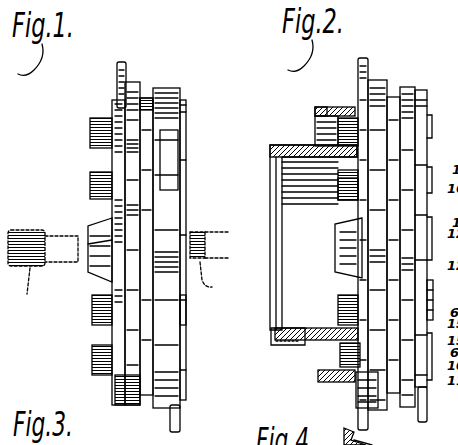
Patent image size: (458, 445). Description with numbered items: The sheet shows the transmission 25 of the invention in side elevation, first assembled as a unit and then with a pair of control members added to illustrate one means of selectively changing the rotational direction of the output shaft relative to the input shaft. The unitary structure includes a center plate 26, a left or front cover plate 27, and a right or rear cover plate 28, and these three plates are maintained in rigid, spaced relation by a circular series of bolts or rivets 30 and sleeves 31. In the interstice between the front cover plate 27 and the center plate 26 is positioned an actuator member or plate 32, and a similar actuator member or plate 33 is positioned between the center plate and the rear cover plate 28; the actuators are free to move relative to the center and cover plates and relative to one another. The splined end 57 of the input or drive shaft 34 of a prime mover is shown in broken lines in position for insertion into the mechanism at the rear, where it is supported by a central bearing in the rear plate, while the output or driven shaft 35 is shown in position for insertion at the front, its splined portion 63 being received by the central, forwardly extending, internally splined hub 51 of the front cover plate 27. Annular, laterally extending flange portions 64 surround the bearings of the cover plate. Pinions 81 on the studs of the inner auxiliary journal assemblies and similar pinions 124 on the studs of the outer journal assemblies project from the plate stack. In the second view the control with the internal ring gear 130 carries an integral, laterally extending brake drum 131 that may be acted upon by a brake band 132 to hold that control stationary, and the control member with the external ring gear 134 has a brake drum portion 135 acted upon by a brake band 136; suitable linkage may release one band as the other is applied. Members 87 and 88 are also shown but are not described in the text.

In FIG. 1, the transmission 25 is at (172, 70).
In FIG. 2, the transmission 25 is at (410, 84).
In FIG. 1, the center plate 26 is at (146, 96).
In FIG. 2, the center plate 26 is at (392, 96).
In FIG. 1, the front cover plate 27 is at (117, 160).
In FIG. 2, the front cover plate 27 is at (364, 81).
In FIG. 1, the rear cover plate 28 is at (175, 136).
In FIG. 2, the rear cover plate 28 is at (422, 88).
In FIG. 1, the bolts or rivets 30 is at (184, 110).
In FIG. 2, the bolts or rivets 30 is at (429, 108).
In FIG. 1, the sleeves 31 is at (161, 105).
In FIG. 2, the sleeves 31 is at (367, 80).
In FIG. 1, the actuator member or plate 32 is at (130, 204).
In FIG. 1, the actuator member or plate 33 is at (162, 184).
In FIG. 1, the input or drive shaft 34 is at (234, 232).
In FIG. 1, the output or driven shaft 35 is at (65, 232).
In FIG. 1, the internally splined hub 51 is at (102, 276).
In FIG. 2, the internally splined hub 51 is at (339, 270).
In FIG. 1, the splined end 57 is at (215, 278).
In FIG. 1, the splined portion 63 is at (27, 290).
In FIG. 1, the flange portions 64 is at (116, 381).
In FIG. 2, the flange portions 64 is at (434, 295).
In FIG. 1, the pinion 81 is at (92, 191).
In FIG. 2, the pinion 81 is at (343, 206).
In FIG. 2, the bracket 87 is at (366, 444).
In FIG. 2, the bracket 88 is at (357, 429).
In FIG. 1, the pinion 124 is at (96, 121).
In FIG. 2, the pinion 124 is at (341, 197).
In FIG. 2, the control with internal ring gear 130 is at (348, 106).
In FIG. 2, the brake drum 131 is at (314, 110).
In FIG. 2, the brake band 132 is at (320, 108).
In FIG. 2, the control member with external ring gear 134 is at (351, 329).
In FIG. 2, the brake drum portion 135 is at (273, 333).
In FIG. 2, the brake band 136 is at (278, 146).